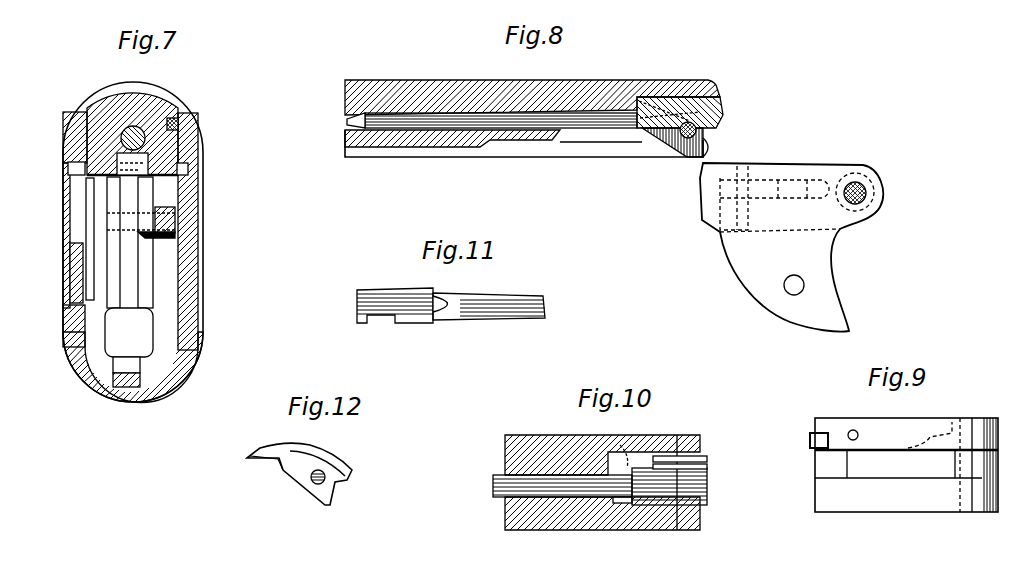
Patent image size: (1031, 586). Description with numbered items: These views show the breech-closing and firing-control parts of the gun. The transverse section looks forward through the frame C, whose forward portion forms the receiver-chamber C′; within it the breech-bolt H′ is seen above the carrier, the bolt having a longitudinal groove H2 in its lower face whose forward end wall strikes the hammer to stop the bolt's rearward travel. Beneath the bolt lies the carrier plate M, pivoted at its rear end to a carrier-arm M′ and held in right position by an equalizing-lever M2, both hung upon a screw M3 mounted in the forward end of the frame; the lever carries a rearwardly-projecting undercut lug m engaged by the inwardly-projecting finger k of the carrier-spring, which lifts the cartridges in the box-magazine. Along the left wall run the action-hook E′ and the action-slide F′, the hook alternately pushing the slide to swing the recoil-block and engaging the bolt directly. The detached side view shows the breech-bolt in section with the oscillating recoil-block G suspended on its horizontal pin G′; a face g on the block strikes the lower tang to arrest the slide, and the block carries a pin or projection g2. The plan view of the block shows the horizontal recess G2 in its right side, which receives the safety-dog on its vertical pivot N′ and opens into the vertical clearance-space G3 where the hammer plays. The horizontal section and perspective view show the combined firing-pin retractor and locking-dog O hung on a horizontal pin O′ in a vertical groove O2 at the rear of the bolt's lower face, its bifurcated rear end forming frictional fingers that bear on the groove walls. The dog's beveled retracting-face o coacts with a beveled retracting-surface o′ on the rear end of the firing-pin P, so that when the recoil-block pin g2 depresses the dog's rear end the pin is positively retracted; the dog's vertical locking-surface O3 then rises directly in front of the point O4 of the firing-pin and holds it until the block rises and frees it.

In FIG. 7, the frame C is at (195, 321).
In FIG. 7, the chamber C′ is at (97, 344).
In FIG. 7, the breech-bolt H′ is at (102, 97).
In FIG. 8, the breech-bolt H′ is at (443, 73).
In FIG. 10, the breech-bolt H′ is at (602, 471).
In FIG. 7, the longitudinal groove H2 is at (66, 147).
In FIG. 8, the longitudinal groove H2 is at (517, 147).
In FIG. 7, the firing-pin P is at (146, 117).
In FIG. 8, the firing-pin P is at (537, 100).
In FIG. 11, the firing-pin P is at (494, 297).
In FIG. 10, the firing-pin P is at (503, 474).
In FIG. 7, the rearwardly-projecting undercut lug m is at (126, 233).
In FIG. 7, the action-hook E′ is at (92, 215).
In FIG. 7, the action-slide F′ is at (70, 270).
In FIG. 7, the plate M is at (129, 332).
In FIG. 7, the carrier-arm M′ is at (110, 300).
In FIG. 7, the equalizing-lever M2 is at (132, 282).
In FIG. 7, the screw M3 is at (180, 215).
In FIG. 7, the inwardly-projecting finger k is at (161, 239).
In FIG. 8, the combined firing-pin retractor and locking-dog O is at (690, 157).
In FIG. 12, the combined firing-pin retractor and locking-dog O is at (278, 460).
In FIG. 10, the combined firing-pin retractor and locking-dog O is at (643, 456).
In FIG. 8, the horizontal pin O′ is at (708, 133).
In FIG. 10, the horizontal pin O′ is at (707, 462).
In FIG. 8, the vertical groove O2 is at (633, 103).
In FIG. 12, the vertical groove O2 is at (333, 482).
In FIG. 10, the vertical groove O2 is at (505, 522).
In FIG. 8, the extractor hook O3 is at (660, 125).
In FIG. 12, the extractor hook O3 is at (279, 478).
In FIG. 8, the extractor seat O4 is at (658, 98).
In FIG. 10, the extractor seat O4 is at (595, 523).
In FIG. 8, the beveled retracting-face o is at (643, 103).
In FIG. 10, the beveled retracting-face o is at (627, 445).
In FIG. 8, the beveled retracting-surface o′ is at (695, 90).
In FIG. 11, the beveled retracting-surface o′ is at (427, 321).
In FIG. 8, the recoil-block G is at (791, 247).
In FIG. 9, the recoil-block G is at (898, 421).
In FIG. 8, the horizontal pin G′ is at (864, 183).
In FIG. 8, the horizontal recess G2 is at (817, 180).
In FIG. 9, the horizontal recess G2 is at (925, 435).
In FIG. 9, the vertical clearance-space G3 is at (901, 464).
In FIG. 8, the face g is at (717, 215).
In FIG. 8, the pin or projection g2 is at (698, 190).
In FIG. 9, the pin or projection g2 is at (810, 441).
In FIG. 8, the vertically-arranged pivot or pin N′ is at (745, 163).
In FIG. 9, the vertically-arranged pivot or pin N′ is at (855, 431).